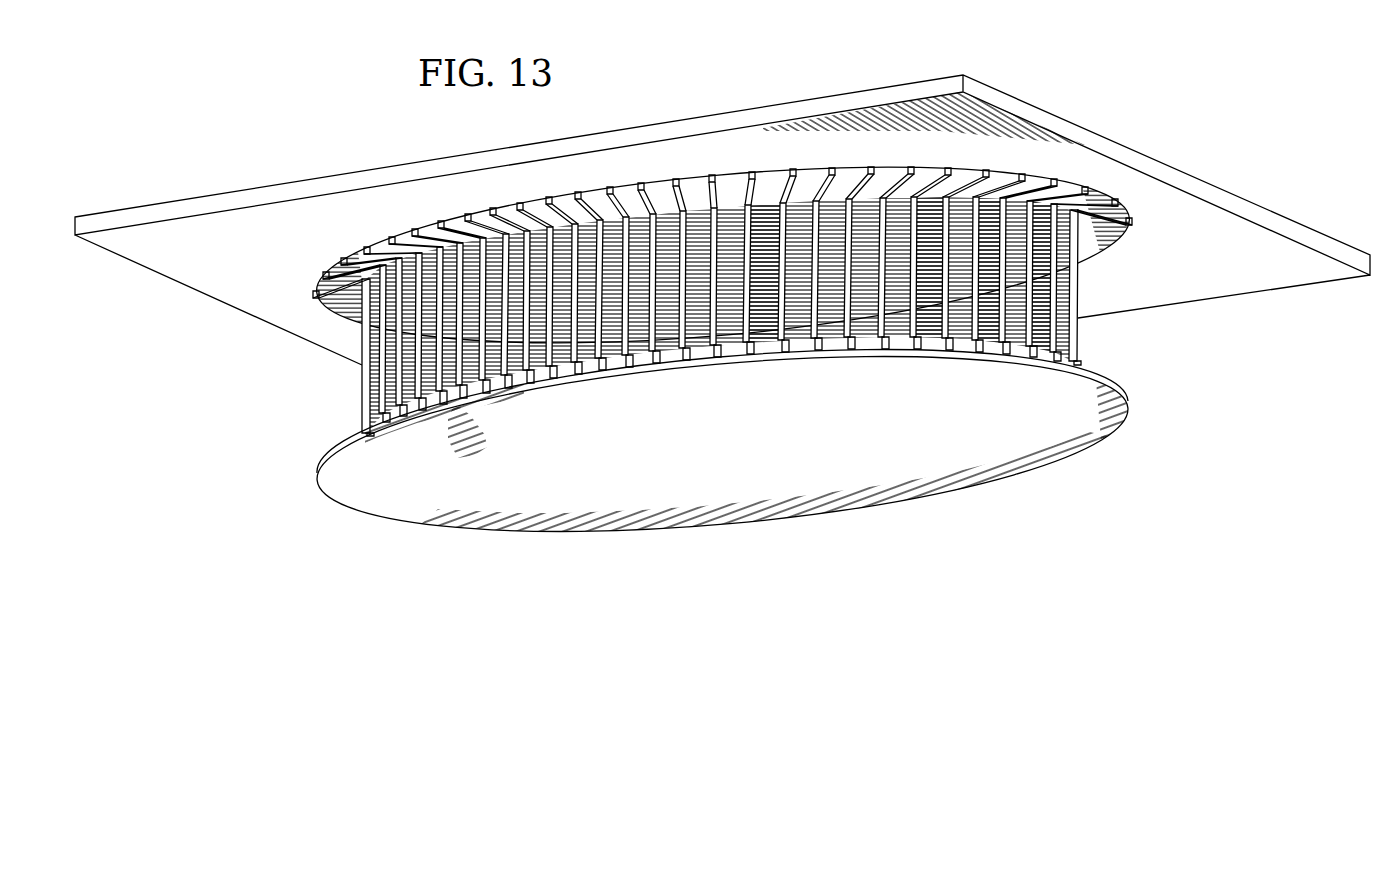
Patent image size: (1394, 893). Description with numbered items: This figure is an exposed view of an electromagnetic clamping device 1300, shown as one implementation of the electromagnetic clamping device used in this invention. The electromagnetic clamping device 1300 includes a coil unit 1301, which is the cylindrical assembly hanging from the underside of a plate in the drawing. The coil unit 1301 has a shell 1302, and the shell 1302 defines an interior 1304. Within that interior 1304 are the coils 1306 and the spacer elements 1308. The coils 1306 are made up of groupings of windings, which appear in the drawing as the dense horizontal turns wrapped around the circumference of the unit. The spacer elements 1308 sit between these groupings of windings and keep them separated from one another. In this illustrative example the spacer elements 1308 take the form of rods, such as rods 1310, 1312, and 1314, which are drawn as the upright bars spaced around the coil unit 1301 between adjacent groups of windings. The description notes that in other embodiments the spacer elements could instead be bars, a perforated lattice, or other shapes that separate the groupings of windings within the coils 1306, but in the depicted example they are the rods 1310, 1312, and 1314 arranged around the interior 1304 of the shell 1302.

The electromagnetic clamping device 1300 is at (314, 136).
The coil unit 1301 is at (334, 258).
The shell 1302 is at (327, 266).
The interior 1304 is at (356, 382).
The coils 1306 is at (774, 337).
The spacer elements 1308 is at (661, 337).
The rod 1310 is at (923, 330).
The rod 1312 is at (988, 333).
The rod 1314 is at (1042, 350).